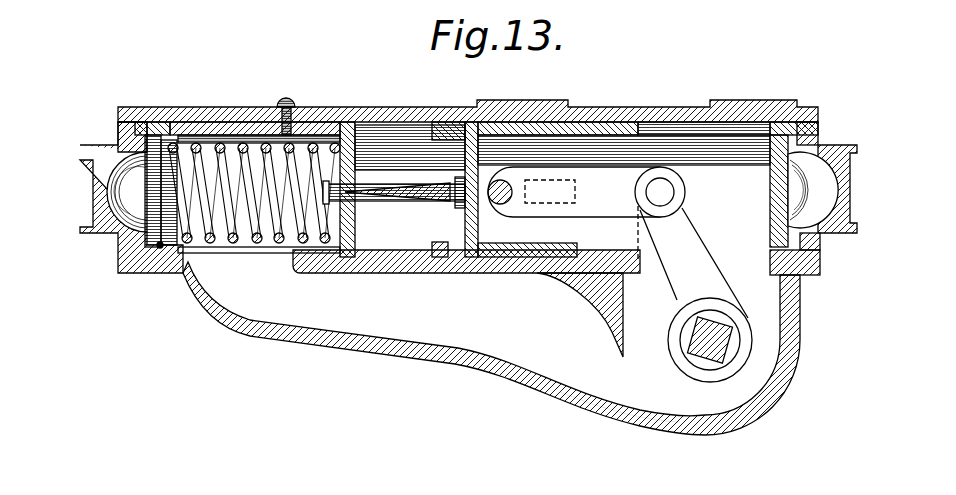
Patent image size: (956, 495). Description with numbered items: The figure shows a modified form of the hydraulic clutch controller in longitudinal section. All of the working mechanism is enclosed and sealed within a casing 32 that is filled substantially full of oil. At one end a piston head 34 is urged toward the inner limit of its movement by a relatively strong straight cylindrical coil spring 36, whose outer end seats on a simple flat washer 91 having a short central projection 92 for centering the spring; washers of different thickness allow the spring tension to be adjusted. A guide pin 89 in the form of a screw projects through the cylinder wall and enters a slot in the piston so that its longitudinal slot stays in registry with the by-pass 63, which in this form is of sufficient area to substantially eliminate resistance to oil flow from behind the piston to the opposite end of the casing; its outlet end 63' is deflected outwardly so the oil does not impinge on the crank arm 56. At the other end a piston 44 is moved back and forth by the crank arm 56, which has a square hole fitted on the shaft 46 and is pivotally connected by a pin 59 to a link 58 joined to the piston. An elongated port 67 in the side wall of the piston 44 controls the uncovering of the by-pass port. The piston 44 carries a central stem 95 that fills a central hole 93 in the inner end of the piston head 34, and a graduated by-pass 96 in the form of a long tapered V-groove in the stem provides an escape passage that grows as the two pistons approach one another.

The casing 32 is at (207, 114).
The guide pin 89 is at (287, 100).
The piston 44 is at (592, 124).
The central hole 93 is at (361, 168).
The central stem 95 is at (376, 199).
The graduated by-pass 96 is at (440, 198).
The elongated port 67 is at (574, 187).
The link 58 is at (603, 201).
The pin 59 is at (656, 194).
The crank arm 56 is at (702, 258).
The flat washer 91 is at (145, 236).
The central projection 92 is at (168, 218).
The spring 36 is at (240, 245).
The piston head 34 is at (331, 257).
The by-pass 63 is at (491, 348).
The outlet end 63' is at (607, 393).
The shaft 46 is at (677, 342).